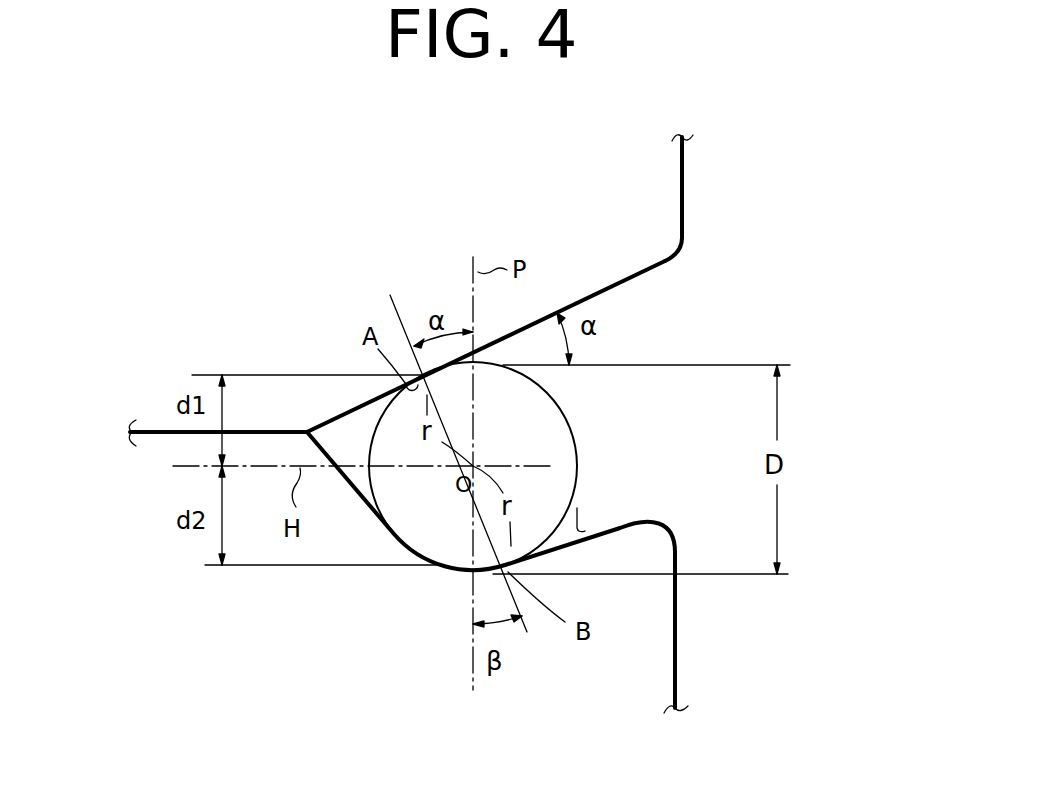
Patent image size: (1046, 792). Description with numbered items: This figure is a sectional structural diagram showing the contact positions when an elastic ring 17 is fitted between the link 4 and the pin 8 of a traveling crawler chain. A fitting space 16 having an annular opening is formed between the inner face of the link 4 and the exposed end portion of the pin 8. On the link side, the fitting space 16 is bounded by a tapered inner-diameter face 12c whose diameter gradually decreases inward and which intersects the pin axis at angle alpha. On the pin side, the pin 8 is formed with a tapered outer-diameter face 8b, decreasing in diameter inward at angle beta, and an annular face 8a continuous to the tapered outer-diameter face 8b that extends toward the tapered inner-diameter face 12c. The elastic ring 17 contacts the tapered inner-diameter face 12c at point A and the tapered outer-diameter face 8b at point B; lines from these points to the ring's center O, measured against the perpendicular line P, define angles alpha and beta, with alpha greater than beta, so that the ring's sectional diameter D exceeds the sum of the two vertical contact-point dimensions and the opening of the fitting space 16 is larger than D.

The link 4 is at (668, 190).
The pin 8 is at (664, 657).
The annular face 8a is at (437, 571).
The tapered outer-diameter face 8b is at (615, 527).
The tapered inner-diameter face 12c is at (363, 410).
The fitting space 16 is at (720, 310).
The elastic ring 17 is at (565, 418).